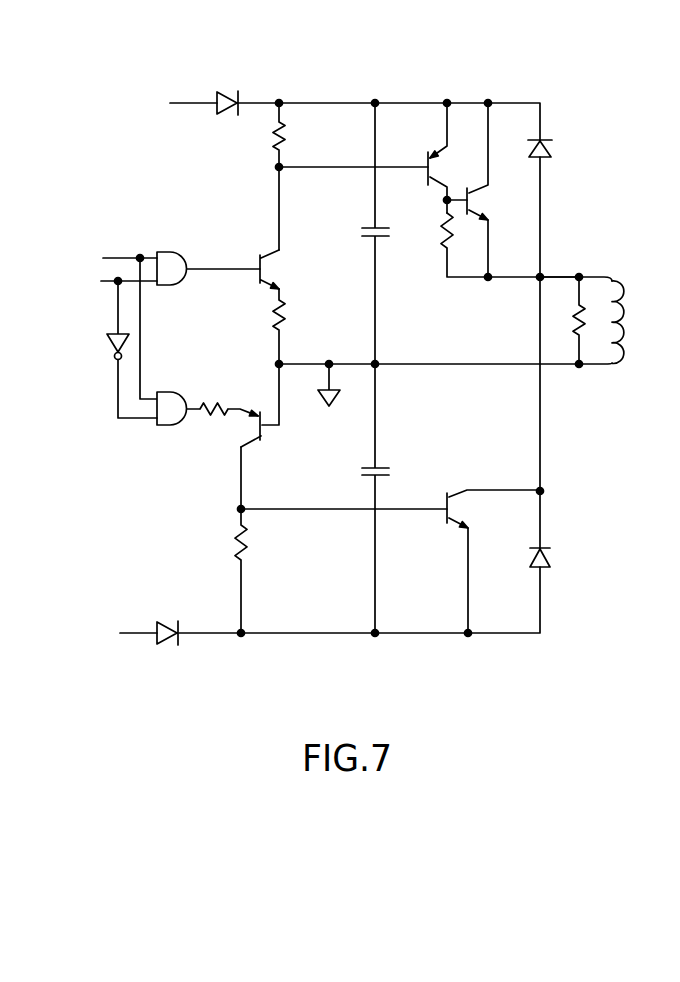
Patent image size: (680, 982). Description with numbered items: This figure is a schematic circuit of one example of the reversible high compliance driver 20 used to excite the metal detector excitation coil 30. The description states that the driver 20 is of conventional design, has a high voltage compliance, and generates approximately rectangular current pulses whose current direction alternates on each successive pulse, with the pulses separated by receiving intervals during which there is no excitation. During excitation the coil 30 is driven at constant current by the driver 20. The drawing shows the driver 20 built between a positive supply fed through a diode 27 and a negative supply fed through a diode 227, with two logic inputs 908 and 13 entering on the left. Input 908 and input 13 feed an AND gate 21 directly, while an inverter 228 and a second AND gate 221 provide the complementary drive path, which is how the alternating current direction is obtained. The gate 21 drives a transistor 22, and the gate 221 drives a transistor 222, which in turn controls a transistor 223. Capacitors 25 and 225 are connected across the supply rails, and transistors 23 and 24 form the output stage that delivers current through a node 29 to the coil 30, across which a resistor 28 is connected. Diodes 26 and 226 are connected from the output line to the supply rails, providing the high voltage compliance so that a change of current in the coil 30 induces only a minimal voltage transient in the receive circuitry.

The driver 20 is at (363, 386).
The diode 27 is at (226, 90).
The diode 227 is at (166, 648).
The input signal line 908 is at (107, 259).
The input signal line 13 is at (116, 281).
The AND gate 21 is at (206, 252).
The inverter 228 is at (107, 349).
The AND gate 221 is at (199, 358).
The transistor 22 is at (283, 269).
The transistor 222 is at (270, 439).
The capacitor 25 is at (386, 233).
The capacitor 225 is at (395, 498).
The transistor 23 is at (446, 158).
The transistor 24 is at (491, 190).
The diode 26 is at (558, 151).
The node 29 is at (559, 265).
The resistor 28 is at (565, 320).
The coil 30 is at (610, 305).
The transistor 223 is at (493, 561).
The diode 226 is at (559, 544).